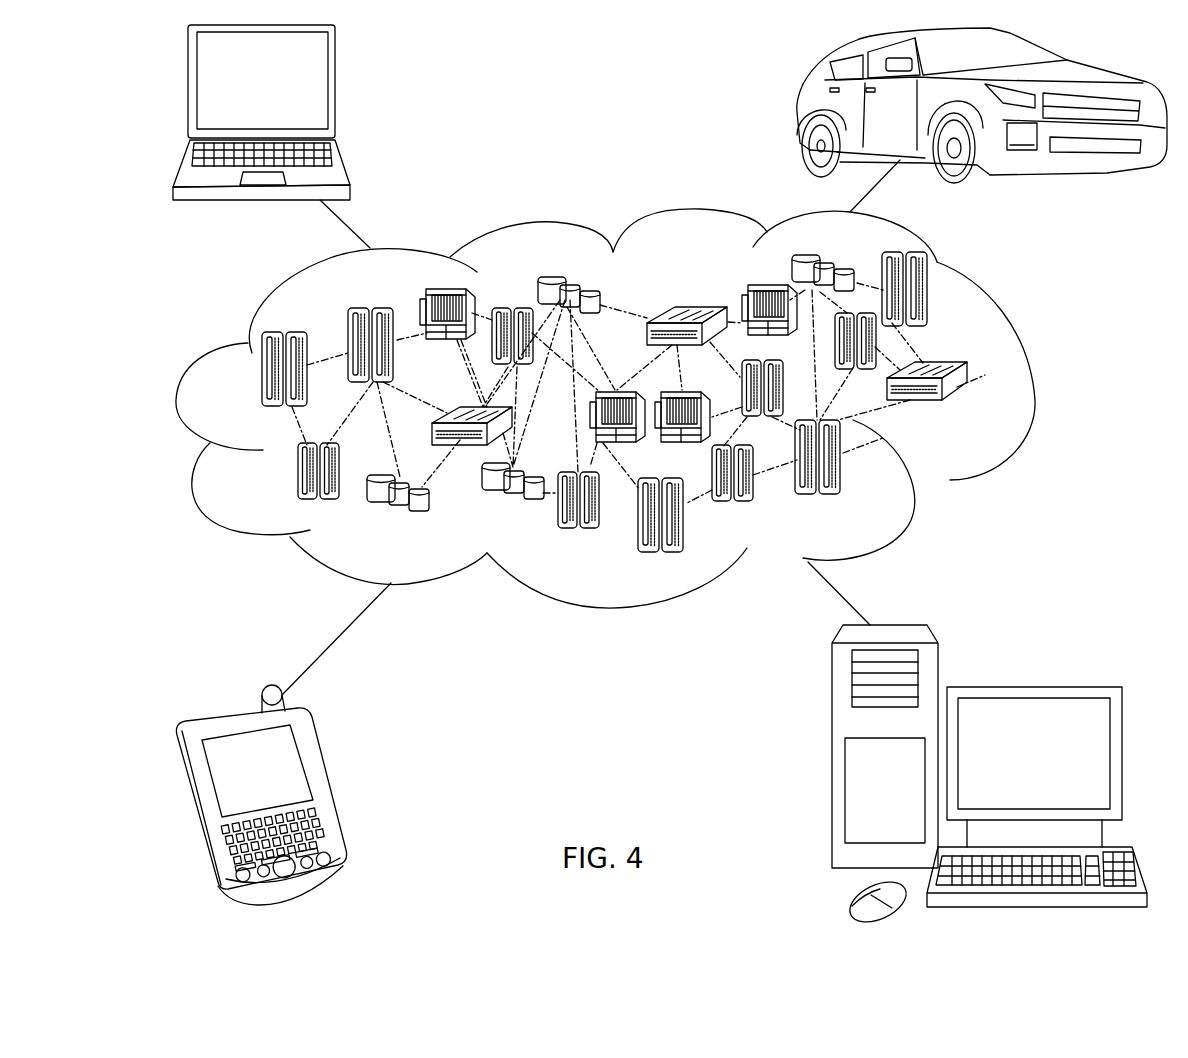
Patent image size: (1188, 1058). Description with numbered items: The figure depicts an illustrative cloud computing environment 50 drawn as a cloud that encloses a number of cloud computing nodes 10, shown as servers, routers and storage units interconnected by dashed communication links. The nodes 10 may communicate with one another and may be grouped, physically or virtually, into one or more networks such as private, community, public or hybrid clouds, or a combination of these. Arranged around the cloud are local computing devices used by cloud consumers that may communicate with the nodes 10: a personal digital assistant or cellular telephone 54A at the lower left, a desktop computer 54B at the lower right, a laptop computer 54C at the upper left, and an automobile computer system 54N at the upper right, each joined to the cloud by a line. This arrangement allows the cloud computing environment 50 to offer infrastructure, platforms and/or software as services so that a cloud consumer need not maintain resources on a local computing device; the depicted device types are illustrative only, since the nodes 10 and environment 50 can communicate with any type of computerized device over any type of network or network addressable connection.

The laptop computer 54C is at (336, 91).
The automobile computer system 54N is at (798, 108).
The personal digital assistant or cellular telephone 54A is at (325, 783).
The desktop computer 54B is at (1030, 685).
The cloud computing environment 50 is at (1030, 380).
The cloud computing nodes 10 is at (983, 415).